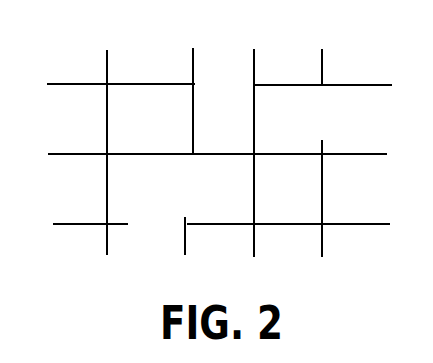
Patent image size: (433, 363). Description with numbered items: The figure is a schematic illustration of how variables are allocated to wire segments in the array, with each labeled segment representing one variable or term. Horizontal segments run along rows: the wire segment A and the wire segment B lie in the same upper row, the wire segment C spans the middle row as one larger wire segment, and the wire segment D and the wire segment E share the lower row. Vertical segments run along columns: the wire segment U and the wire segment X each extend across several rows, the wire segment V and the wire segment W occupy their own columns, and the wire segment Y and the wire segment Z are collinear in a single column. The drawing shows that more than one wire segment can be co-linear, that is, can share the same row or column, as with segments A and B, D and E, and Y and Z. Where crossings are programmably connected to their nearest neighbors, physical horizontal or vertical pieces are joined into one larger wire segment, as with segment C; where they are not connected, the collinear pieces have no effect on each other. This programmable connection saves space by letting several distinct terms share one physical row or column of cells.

The wire segment A is at (121, 84).
The wire segment B is at (321, 85).
The wire segment C is at (219, 154).
The wire segment D is at (89, 224).
The wire segment E is at (287, 224).
The wire segment U is at (106, 139).
The wire segment V is at (149, 155).
The wire segment W is at (185, 241).
The wire segment X is at (254, 154).
The wire segment Y is at (322, 66).
The wire segment Z is at (322, 200).